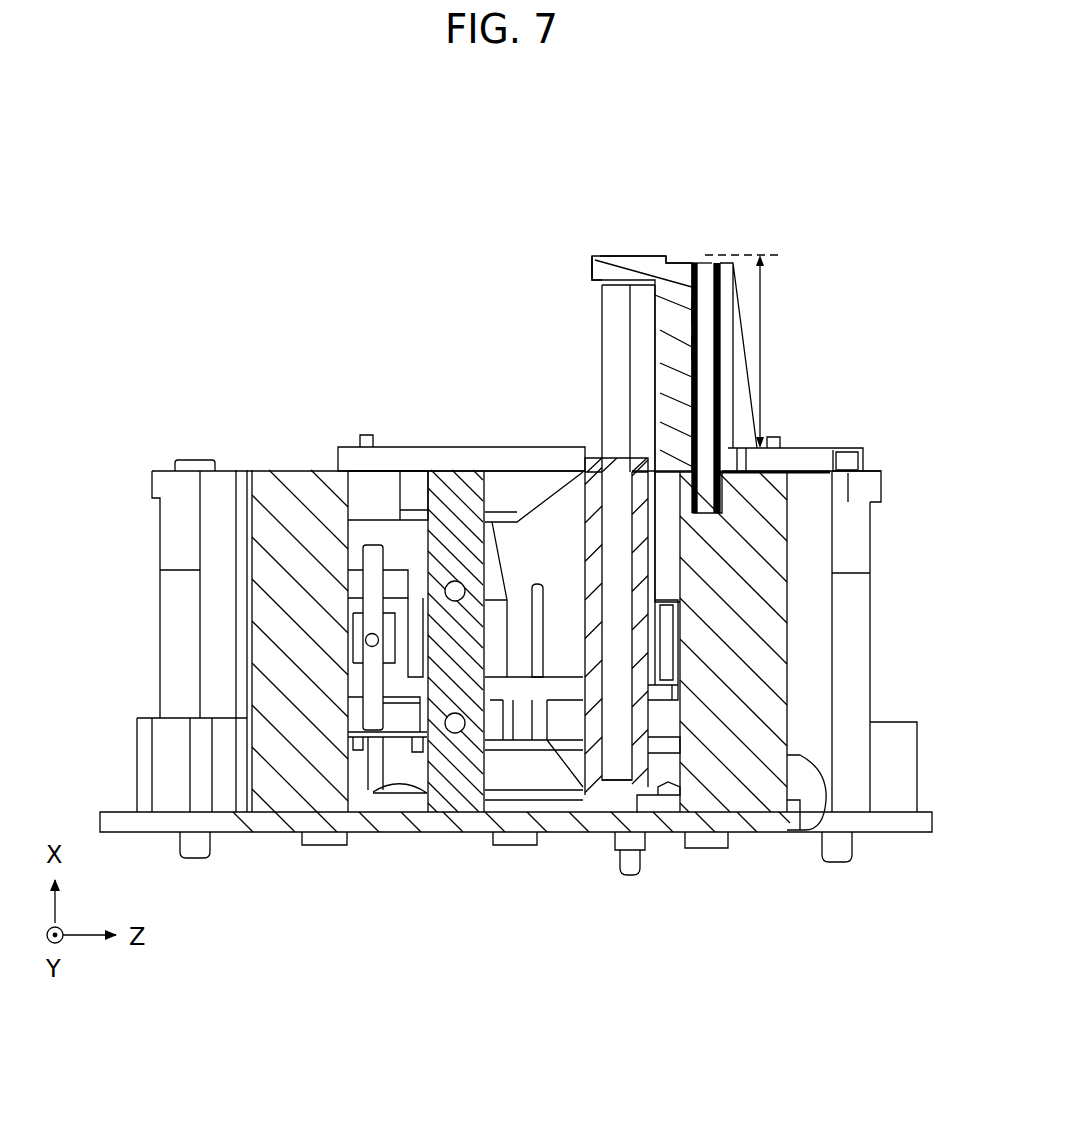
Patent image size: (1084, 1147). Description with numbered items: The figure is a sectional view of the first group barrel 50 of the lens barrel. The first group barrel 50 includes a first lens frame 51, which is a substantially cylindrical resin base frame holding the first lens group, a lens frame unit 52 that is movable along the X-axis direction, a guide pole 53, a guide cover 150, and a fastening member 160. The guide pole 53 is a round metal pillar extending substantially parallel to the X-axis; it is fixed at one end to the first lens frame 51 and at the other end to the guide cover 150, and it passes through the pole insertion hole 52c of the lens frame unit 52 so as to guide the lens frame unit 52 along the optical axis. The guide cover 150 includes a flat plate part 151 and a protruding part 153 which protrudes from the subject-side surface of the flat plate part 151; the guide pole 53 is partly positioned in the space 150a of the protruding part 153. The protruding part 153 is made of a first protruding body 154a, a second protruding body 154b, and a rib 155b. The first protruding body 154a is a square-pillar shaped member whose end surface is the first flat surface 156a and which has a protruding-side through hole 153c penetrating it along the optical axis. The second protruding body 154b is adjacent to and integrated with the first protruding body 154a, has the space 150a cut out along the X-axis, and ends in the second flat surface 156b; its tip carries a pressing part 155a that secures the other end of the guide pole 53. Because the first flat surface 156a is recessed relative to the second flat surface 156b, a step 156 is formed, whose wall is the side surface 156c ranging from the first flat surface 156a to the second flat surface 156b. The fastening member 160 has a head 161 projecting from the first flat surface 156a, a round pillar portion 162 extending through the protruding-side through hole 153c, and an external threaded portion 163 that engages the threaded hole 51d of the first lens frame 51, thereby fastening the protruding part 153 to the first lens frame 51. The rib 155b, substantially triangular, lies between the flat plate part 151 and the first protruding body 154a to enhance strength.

The first group barrel 50 is at (838, 254).
The first lens frame 51 is at (447, 818).
The threaded hole 51d is at (722, 480).
The lens frame unit 52 is at (591, 790).
The pole insertion hole 52c is at (633, 750).
The guide pole 53 is at (610, 266).
The guide cover 150 is at (413, 437).
The space 150a is at (653, 285).
The flat plate part 151 is at (388, 455).
The protruding part 153 is at (650, 246).
The protruding-side through hole 153c is at (690, 312).
The first protruding body 154a is at (675, 433).
The second protruding body 154b is at (663, 403).
The pressing part 155a is at (603, 266).
The rib 155b is at (745, 400).
The step 156 is at (657, 256).
The first flat surface 156a is at (698, 263).
The second flat surface 156b is at (612, 256).
The side surface 156c is at (677, 261).
The fastening member 160 is at (688, 378).
The head 161 is at (716, 260).
The round pillar portion 162 is at (697, 347).
The external threaded portion 163 is at (727, 467).